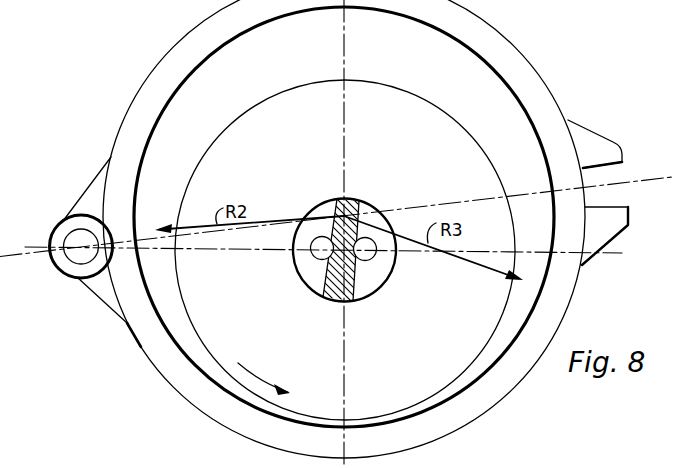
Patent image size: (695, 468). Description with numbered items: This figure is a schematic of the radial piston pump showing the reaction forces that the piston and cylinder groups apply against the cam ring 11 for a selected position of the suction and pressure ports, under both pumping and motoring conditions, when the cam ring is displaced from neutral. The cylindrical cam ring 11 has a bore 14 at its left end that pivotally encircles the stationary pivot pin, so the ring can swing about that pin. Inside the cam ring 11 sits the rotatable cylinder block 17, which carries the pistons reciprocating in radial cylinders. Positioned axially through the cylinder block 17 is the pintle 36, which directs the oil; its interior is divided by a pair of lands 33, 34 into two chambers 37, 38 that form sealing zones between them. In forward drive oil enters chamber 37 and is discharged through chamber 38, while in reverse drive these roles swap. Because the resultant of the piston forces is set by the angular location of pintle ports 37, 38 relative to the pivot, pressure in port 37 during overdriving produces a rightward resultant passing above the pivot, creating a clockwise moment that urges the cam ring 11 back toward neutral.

The cam ring 11 is at (514, 50).
The bore 14 is at (72, 250).
The cylinder block 17 is at (466, 145).
The land 33 is at (352, 200).
The land 34 is at (331, 299).
The pintle 36 is at (363, 203).
The chamber of the pintle 37 is at (373, 262).
The discharge chamber of the pintle 38 is at (316, 256).